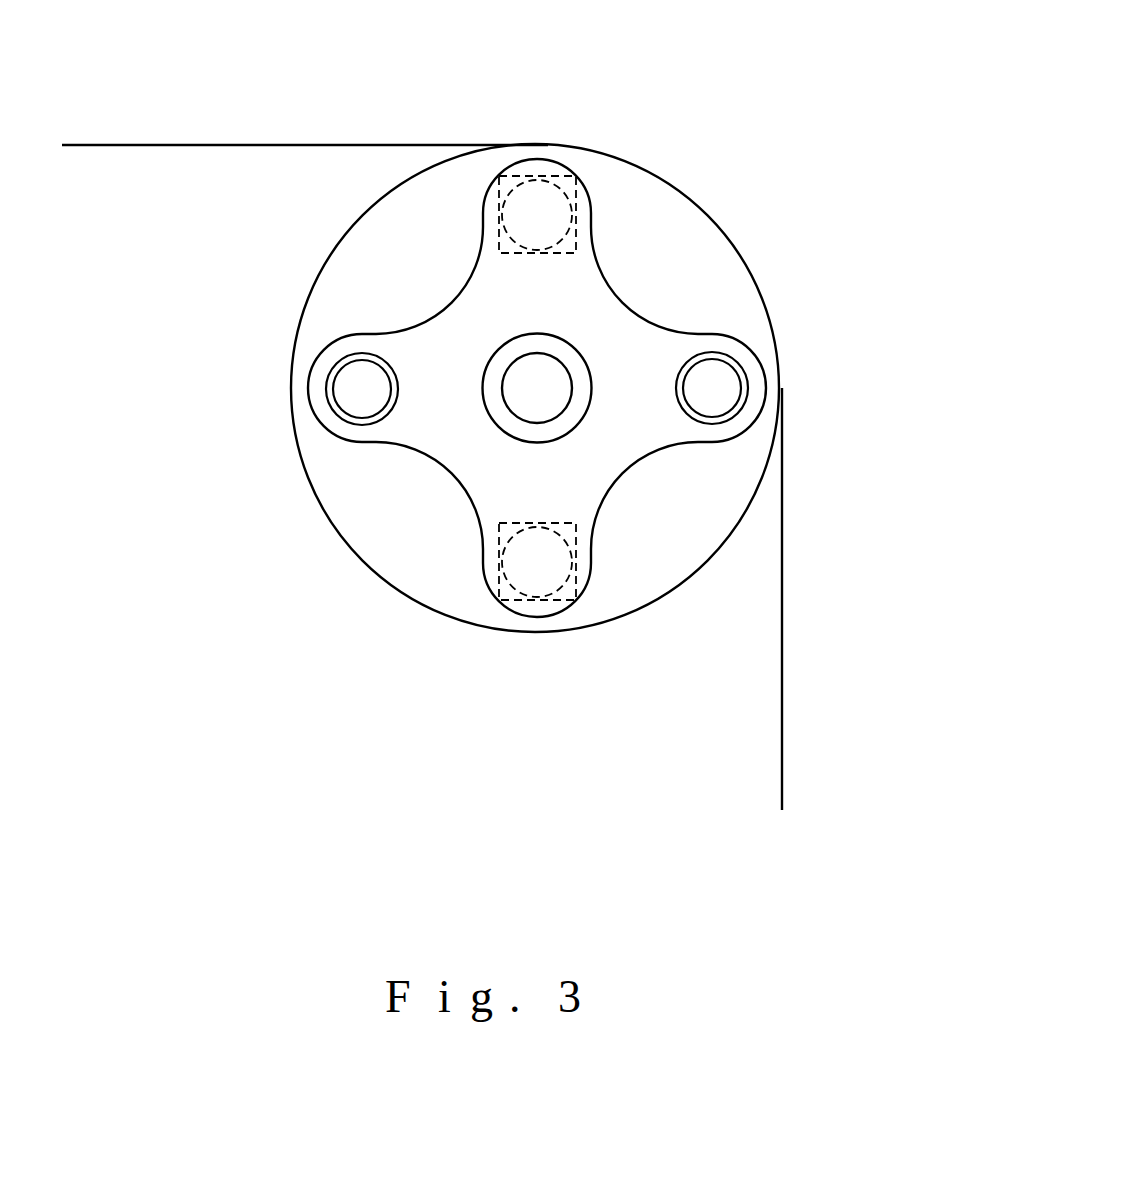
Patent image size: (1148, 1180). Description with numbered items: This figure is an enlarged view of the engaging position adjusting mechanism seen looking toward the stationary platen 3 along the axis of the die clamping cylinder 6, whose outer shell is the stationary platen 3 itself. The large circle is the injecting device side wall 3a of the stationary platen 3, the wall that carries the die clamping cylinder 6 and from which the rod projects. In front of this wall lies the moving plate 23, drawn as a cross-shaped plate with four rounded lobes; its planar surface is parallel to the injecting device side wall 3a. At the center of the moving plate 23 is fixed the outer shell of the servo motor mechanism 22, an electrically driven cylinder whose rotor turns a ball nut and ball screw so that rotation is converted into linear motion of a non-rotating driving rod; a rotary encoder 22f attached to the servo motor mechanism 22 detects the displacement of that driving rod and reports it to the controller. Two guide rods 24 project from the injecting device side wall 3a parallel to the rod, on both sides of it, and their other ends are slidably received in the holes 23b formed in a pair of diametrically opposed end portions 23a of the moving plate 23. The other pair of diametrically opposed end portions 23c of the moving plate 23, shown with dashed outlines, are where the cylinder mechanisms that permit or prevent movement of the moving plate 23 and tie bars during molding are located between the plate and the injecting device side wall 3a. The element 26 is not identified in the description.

The stationary platen 3 is at (220, 175).
The injecting device side wall 3a is at (523, 368).
The die clamping cylinder 6 is at (393, 590).
The servo motor mechanism 22 is at (715, 443).
The rotary encoder 22f is at (545, 385).
The moving plate 23 is at (538, 405).
The diametrically opposed end portions 23a is at (538, 346).
The holes 23b is at (538, 346).
The diametrically opposed end portions 23c is at (533, 172).
The guide rods 24 is at (362, 396).
The magnet 26 is at (547, 203).